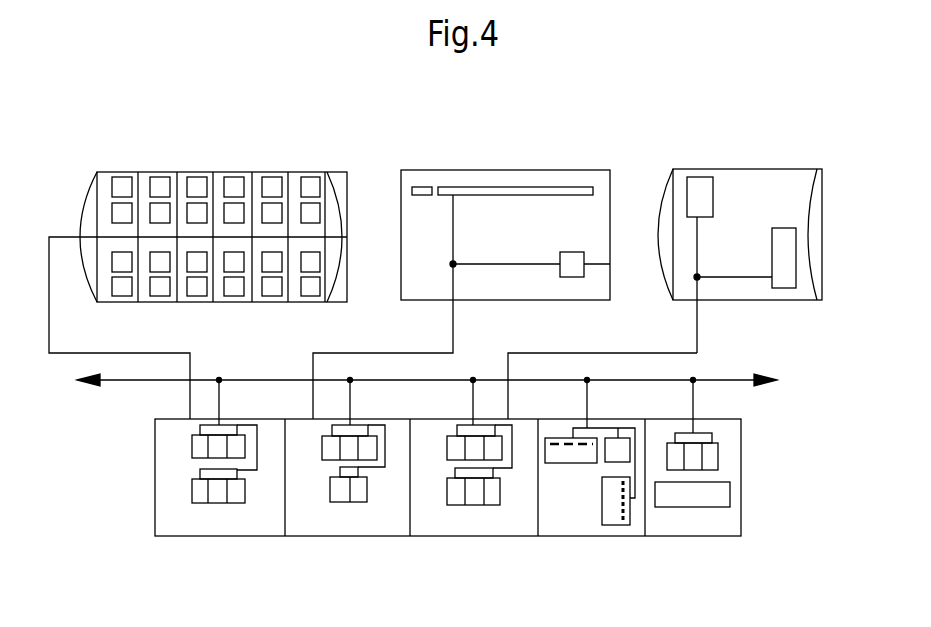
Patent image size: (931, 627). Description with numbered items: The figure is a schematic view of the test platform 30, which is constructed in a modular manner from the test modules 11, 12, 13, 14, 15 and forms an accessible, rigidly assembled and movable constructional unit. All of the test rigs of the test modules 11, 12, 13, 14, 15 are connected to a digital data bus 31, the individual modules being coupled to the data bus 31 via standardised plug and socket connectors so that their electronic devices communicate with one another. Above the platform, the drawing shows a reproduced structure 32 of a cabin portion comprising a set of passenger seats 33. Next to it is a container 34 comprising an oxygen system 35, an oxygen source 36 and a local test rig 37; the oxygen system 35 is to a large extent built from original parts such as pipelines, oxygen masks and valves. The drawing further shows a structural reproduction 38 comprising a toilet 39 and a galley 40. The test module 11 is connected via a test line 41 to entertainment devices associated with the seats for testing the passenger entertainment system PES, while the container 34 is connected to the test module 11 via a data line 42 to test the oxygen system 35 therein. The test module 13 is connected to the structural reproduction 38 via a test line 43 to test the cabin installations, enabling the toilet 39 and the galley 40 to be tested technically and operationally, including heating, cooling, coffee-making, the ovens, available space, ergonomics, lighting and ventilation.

The test module 11 is at (210, 537).
The test module 12 is at (335, 537).
The test module 13 is at (500, 537).
The test module 14 is at (590, 537).
The test module 15 is at (682, 537).
The test platform 30 is at (777, 430).
The data bus 31 is at (118, 382).
The reproduced structure 32 is at (143, 172).
The passenger seats 33 is at (197, 177).
The container 34 is at (505, 170).
The oxygen system 35 is at (578, 187).
The oxygen source 36 is at (420, 187).
The local test rig 37 is at (610, 264).
The structural reproduction 38 is at (790, 169).
The toilet 39 is at (697, 177).
The galley 40 is at (783, 288).
The test line 41 is at (190, 365).
The data line 42 is at (395, 353).
The test line 43 is at (508, 353).